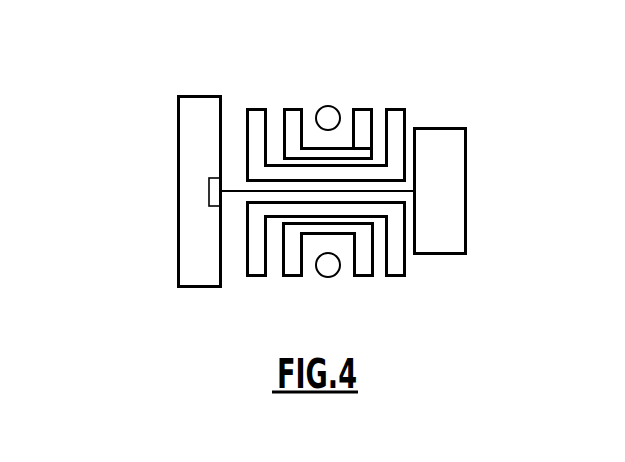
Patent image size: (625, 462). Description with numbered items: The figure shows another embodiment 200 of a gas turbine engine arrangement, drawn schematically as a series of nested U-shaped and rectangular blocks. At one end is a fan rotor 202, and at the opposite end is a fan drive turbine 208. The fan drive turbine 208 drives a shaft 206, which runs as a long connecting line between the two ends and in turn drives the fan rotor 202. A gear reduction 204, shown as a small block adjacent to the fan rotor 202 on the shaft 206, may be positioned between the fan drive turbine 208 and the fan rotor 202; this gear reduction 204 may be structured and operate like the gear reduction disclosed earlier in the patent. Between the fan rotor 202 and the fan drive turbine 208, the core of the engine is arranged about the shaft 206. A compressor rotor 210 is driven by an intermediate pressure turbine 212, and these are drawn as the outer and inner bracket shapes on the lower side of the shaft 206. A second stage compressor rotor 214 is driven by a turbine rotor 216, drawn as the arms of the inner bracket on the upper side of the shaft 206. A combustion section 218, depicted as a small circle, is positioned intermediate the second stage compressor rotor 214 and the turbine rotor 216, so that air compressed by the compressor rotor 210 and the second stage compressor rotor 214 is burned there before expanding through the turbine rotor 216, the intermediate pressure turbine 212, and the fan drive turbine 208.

The embodiment 200 is at (124, 58).
The fan rotor 202 is at (177, 137).
The gear reduction 204 is at (208, 203).
The shaft 206 is at (391, 192).
The fan drive turbine 208 is at (455, 173).
The compressor rotor 210 is at (257, 250).
The intermediate pressure turbine 212 is at (397, 195).
The second stage compressor rotor 214 is at (295, 108).
The turbine rotor 216 is at (363, 108).
The combustion section 218 is at (330, 106).